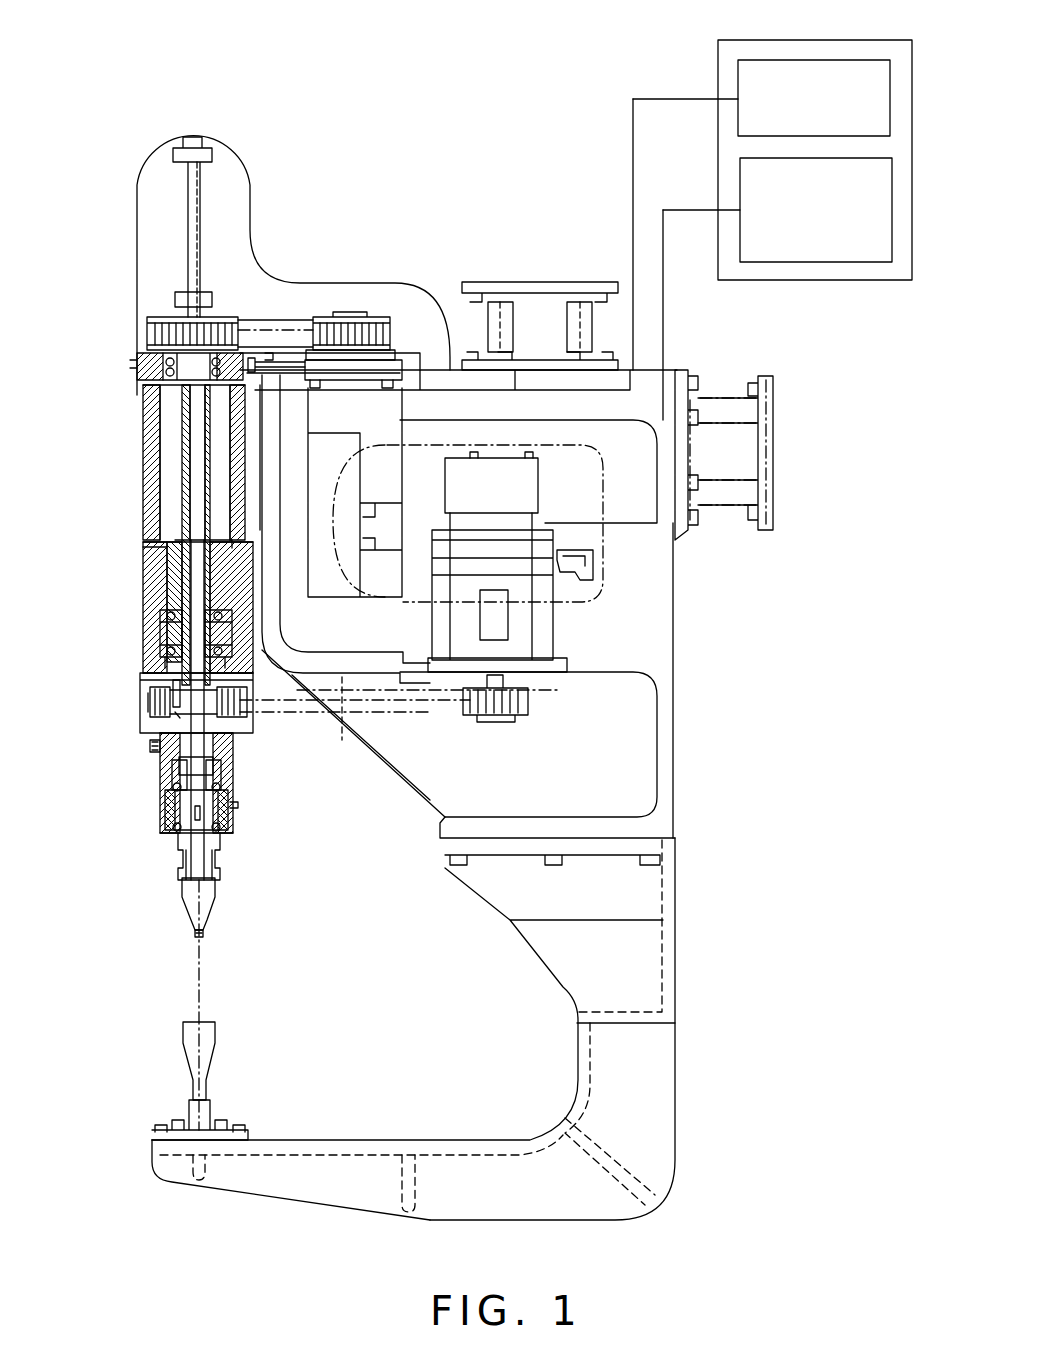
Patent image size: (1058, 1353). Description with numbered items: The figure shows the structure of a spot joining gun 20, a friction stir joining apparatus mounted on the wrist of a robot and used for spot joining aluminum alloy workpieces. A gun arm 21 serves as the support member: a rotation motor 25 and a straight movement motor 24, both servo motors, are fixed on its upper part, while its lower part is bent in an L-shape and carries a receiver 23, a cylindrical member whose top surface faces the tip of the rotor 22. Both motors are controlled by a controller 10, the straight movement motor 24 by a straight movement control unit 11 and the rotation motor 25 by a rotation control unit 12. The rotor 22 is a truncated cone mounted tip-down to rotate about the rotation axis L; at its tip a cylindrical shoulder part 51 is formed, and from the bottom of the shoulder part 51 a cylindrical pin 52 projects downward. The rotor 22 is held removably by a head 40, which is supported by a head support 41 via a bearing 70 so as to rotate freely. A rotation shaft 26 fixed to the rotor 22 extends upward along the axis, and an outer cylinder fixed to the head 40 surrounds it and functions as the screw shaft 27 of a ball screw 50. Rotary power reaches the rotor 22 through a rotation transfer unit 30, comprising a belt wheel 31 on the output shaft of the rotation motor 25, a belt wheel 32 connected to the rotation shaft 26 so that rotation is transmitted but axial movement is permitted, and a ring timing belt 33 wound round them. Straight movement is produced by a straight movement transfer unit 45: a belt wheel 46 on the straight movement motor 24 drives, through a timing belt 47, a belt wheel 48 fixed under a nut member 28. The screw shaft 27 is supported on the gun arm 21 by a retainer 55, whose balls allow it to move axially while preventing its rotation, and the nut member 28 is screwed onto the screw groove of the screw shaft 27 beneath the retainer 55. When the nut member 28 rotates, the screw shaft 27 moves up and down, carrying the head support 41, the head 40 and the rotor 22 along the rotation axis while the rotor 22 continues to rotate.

The controller 10 is at (718, 73).
The straight movement control unit 11 is at (820, 262).
The rotation control unit 12 is at (824, 60).
The spot joining gun 20 is at (440, 205).
The gun arm 21 is at (667, 748).
The rotor 22 is at (193, 893).
The receiver 23 is at (210, 1117).
The straight movement motor 24 is at (520, 620).
The rotation motor 25 is at (390, 425).
The rotation shaft 26 is at (185, 240).
The screw shaft 27 is at (175, 580).
The nut member 28 is at (165, 645).
The rotation transfer unit 30 is at (279, 258).
The belt wheel 31 is at (373, 335).
The belt wheel 32 is at (218, 335).
The timing belt 33 is at (283, 330).
The head 40 is at (170, 806).
The head support 41 is at (168, 764).
The straight movement transfer unit 45 is at (339, 750).
The belt wheel 46 is at (480, 706).
The timing belt 47 is at (428, 700).
The belt wheel 48 is at (242, 702).
The ball screw 50 is at (255, 737).
The shoulder part 51 is at (208, 932).
The pin 52 is at (204, 935).
The retainer 55 is at (170, 562).
The bearing 70 is at (172, 786).